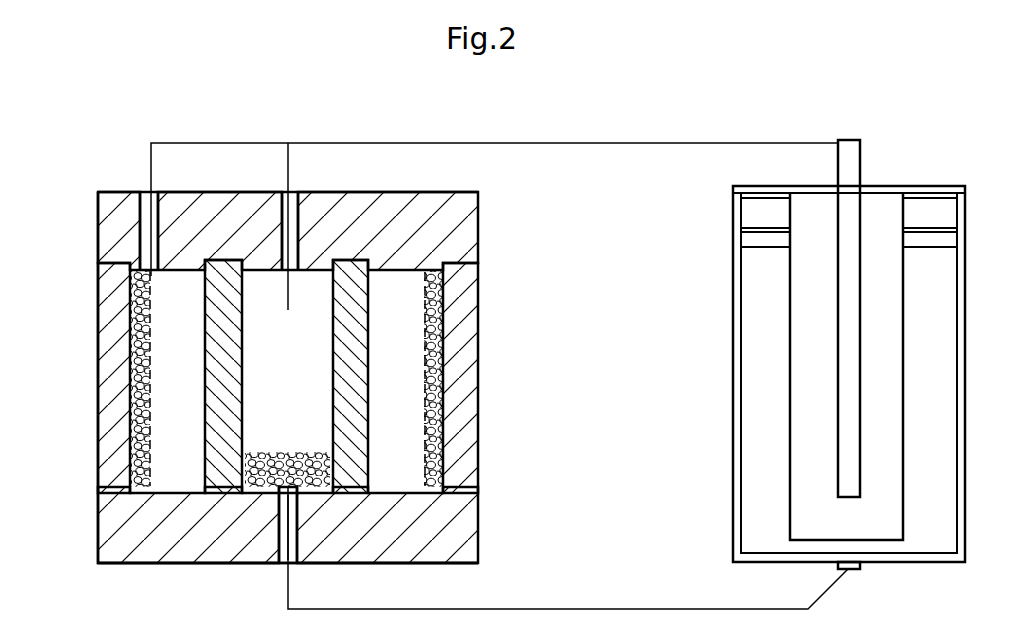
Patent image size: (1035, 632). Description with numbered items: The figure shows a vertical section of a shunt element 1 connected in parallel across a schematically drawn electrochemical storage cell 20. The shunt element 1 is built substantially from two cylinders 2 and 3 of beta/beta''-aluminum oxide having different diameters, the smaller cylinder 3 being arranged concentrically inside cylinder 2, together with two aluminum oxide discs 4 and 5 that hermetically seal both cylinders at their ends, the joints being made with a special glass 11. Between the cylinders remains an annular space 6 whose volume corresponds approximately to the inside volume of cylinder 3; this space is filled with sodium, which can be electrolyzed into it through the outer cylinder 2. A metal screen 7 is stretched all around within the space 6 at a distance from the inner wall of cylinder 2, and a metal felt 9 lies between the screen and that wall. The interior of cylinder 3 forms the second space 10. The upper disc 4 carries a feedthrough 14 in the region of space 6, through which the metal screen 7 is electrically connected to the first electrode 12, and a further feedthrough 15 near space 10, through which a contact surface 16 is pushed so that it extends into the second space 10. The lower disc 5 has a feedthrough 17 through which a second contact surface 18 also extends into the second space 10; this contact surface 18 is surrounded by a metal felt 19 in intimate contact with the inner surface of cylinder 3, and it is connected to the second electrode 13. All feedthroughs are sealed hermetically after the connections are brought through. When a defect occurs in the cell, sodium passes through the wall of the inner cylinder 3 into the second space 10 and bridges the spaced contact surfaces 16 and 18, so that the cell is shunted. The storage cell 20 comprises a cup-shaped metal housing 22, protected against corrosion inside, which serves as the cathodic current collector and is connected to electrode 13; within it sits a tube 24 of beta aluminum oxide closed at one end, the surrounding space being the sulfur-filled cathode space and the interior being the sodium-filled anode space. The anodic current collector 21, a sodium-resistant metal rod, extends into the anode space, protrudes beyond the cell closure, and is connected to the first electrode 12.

The shunt element 1 is at (92, 545).
The outer cylinder 2 is at (106, 423).
The inner cylinder 3 is at (218, 308).
The aluminum oxide disc 4 is at (112, 241).
The aluminum oxide disc 5 is at (467, 530).
The annular space 6 is at (414, 476).
The metal screen 7 is at (432, 436).
The metal felt 9 is at (440, 404).
The second space 10 is at (325, 319).
The special glass 11 is at (474, 265).
The first electrode 12 is at (500, 143).
The second electrode 13 is at (480, 610).
The feedthrough 14 is at (153, 198).
The feedthrough 15 is at (287, 197).
The contact surface 16 is at (284, 198).
The feedthrough 17 is at (294, 550).
The second contact surface 18 is at (285, 533).
The metal felt 19 is at (250, 462).
The storage cell 20 is at (966, 444).
The anodic current collector 21 is at (853, 158).
The cathodic current collector 22 is at (885, 555).
The tube 24 is at (903, 343).